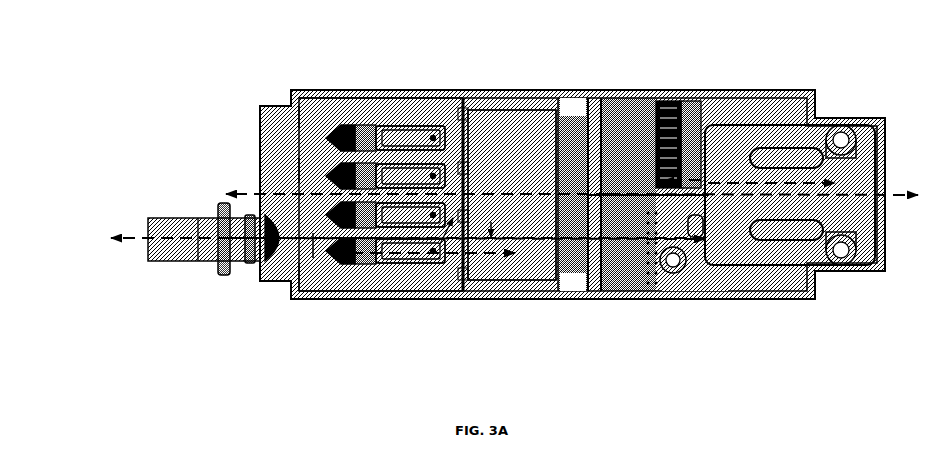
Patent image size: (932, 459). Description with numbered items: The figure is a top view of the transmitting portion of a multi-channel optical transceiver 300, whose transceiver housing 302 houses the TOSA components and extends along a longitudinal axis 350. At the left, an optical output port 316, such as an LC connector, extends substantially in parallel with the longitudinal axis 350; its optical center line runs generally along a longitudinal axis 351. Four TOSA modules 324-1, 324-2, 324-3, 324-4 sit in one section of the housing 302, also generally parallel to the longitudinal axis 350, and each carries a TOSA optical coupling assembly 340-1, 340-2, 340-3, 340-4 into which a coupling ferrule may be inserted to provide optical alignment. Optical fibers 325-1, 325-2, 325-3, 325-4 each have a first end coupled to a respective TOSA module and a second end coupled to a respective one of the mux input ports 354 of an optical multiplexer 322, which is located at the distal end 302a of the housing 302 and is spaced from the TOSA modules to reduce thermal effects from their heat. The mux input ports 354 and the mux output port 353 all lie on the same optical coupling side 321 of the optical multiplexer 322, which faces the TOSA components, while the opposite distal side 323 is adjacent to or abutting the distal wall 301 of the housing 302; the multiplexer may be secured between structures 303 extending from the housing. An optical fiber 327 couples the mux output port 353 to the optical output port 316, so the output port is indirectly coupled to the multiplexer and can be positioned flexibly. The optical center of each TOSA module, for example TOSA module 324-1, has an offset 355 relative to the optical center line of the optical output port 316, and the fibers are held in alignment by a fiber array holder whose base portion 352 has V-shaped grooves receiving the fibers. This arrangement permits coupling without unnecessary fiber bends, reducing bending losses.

The multi-channel optical transceiver 300 is at (186, 60).
The transceiver housing 302 is at (475, 82).
The distal end of the transceiver housing 302a is at (877, 302).
The optical output port 316 is at (152, 208).
The optical fiber 327 is at (363, 102).
The TOSA optical coupling assembly 340-1 is at (352, 272).
The TOSA optical coupling assembly 340-2 is at (345, 225).
The TOSA optical coupling assembly 340-3 is at (342, 145).
The TOSA optical coupling assembly 340-4 is at (347, 100).
The TOSA module 324-1 is at (447, 268).
The TOSA module 324-2 is at (428, 243).
The TOSA module 324-3 is at (443, 160).
The TOSA module 324-4 is at (445, 105).
The optical fiber 325-1 is at (325, 237).
The optical fiber 325-2 is at (283, 265).
The optical fiber 325-3 is at (300, 165).
The optical fiber 325-4 is at (283, 98).
The base portion 352 is at (378, 247).
The longitudinal axis 351 is at (533, 283).
The offset 355 is at (606, 93).
The mux input ports 354 is at (697, 172).
The mux output port 353 is at (680, 92).
The optical multiplexer 322 is at (765, 130).
The optical coupling side 321 is at (757, 160).
The distal wall 301 is at (857, 166).
The structures 303 is at (790, 145).
The distal side 323 is at (877, 165).
The longitudinal axis 350 is at (862, 193).